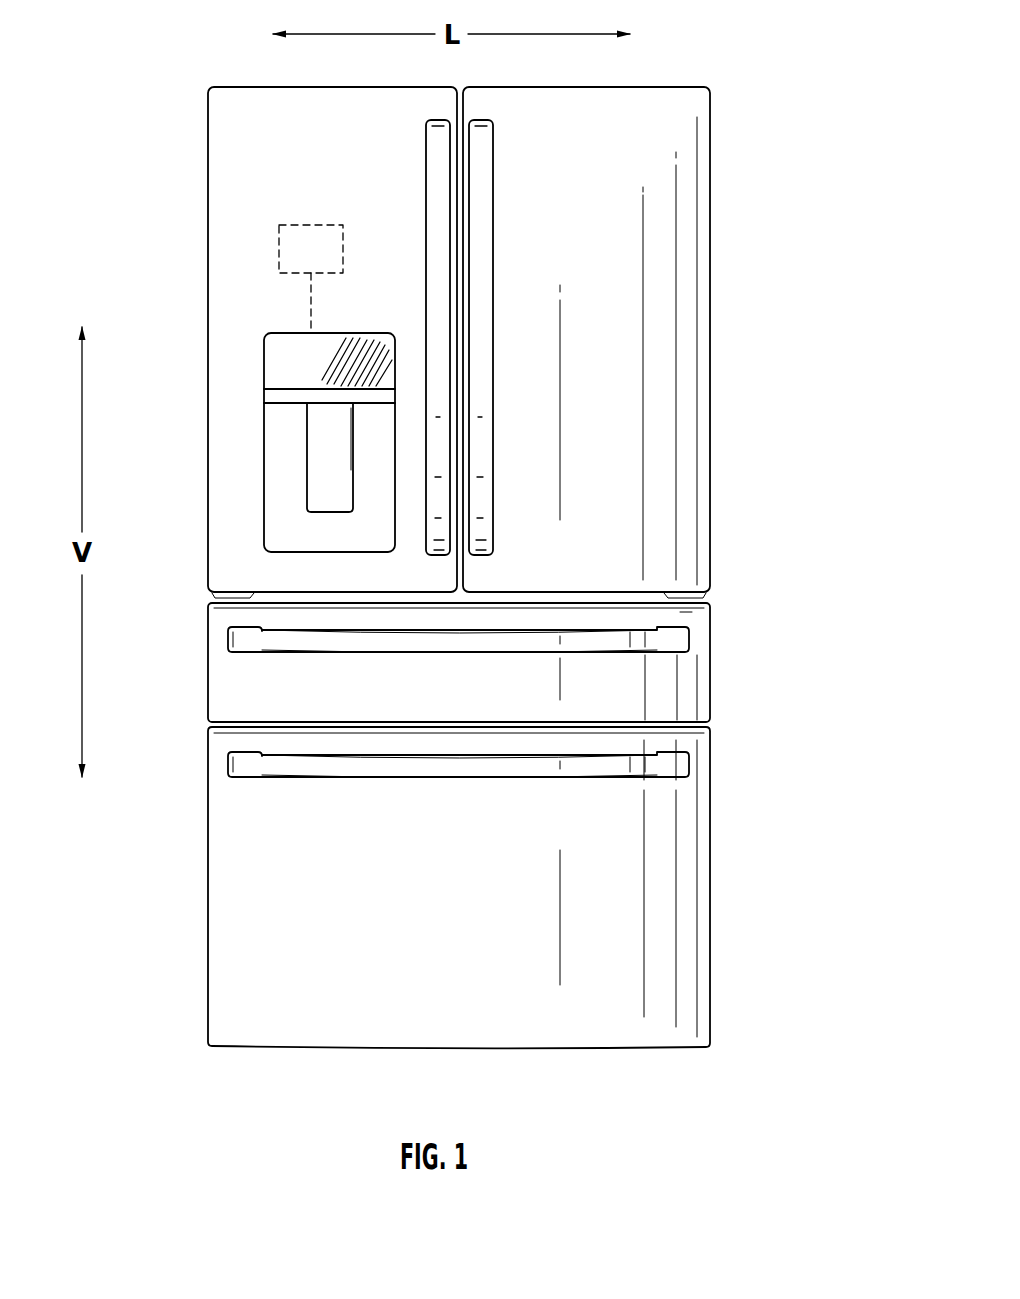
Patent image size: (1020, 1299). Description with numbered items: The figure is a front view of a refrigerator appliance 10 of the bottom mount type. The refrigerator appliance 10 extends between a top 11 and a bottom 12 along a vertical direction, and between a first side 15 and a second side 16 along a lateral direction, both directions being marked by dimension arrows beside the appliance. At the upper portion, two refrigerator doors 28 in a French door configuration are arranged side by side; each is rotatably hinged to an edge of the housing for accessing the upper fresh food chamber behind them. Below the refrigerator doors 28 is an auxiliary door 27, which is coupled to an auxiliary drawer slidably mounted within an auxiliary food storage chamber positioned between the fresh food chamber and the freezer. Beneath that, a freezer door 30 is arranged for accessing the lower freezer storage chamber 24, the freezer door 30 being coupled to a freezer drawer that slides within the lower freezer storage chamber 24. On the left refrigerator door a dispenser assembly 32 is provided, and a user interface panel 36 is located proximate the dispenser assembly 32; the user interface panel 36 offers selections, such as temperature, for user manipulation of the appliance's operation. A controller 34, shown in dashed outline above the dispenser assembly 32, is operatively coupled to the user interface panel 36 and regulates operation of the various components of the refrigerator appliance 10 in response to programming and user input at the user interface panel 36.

The refrigerator appliance 10 is at (439, 577).
The top 11 is at (190, 75).
The bottom 12 is at (230, 1055).
The first side 15 is at (197, 852).
The second side 16 is at (714, 950).
The lower freezer storage chamber 24 is at (608, 998).
The auxiliary door 27 is at (675, 677).
The refrigerator doors 28 is at (235, 140).
The freezer door 30 is at (676, 822).
The dispenser assembly 32 is at (265, 437).
The controller 34 is at (278, 246).
The user interface panel 36 is at (274, 355).